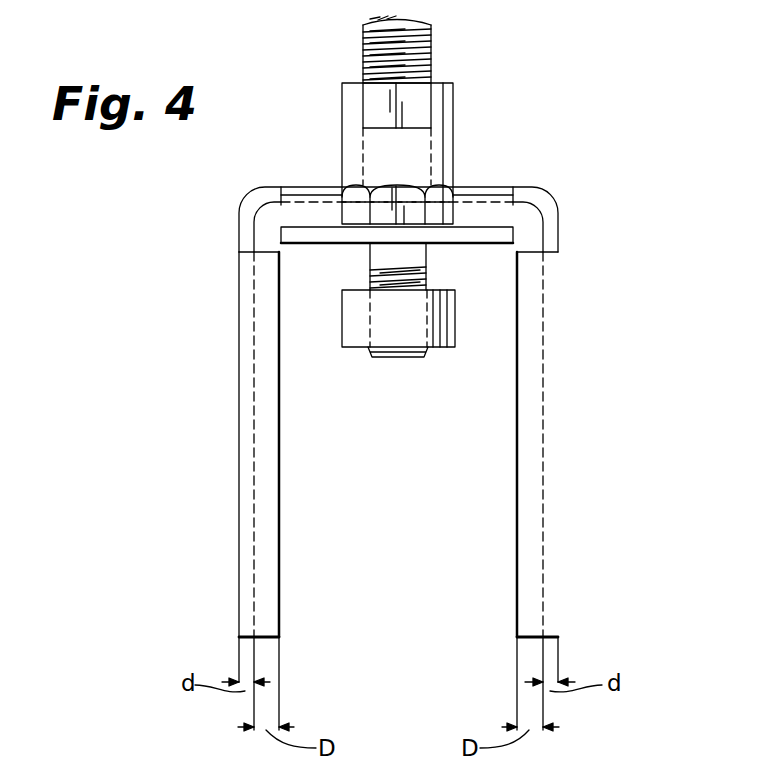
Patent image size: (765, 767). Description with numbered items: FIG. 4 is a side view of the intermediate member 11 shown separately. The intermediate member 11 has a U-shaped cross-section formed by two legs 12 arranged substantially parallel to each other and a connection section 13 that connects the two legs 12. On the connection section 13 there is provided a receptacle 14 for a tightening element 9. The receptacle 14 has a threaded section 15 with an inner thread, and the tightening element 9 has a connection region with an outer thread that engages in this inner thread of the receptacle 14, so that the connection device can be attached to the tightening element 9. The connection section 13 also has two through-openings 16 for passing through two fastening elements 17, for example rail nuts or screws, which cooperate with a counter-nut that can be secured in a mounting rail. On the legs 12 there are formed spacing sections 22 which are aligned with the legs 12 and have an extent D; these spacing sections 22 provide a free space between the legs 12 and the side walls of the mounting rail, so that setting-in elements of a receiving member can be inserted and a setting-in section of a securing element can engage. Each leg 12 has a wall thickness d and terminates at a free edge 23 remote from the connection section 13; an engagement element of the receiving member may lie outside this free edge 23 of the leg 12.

The tightening element 9 is at (378, 47).
The intermediate member 11 is at (607, 113).
The legs 12 is at (240, 439).
The connection section 13 is at (528, 186).
The receptacle 14 is at (342, 118).
The threaded section 15 is at (368, 152).
The through-openings 16 is at (426, 229).
The fastening elements 17 is at (357, 350).
The spacing sections 22 is at (272, 514).
The free edge 23 is at (268, 646).